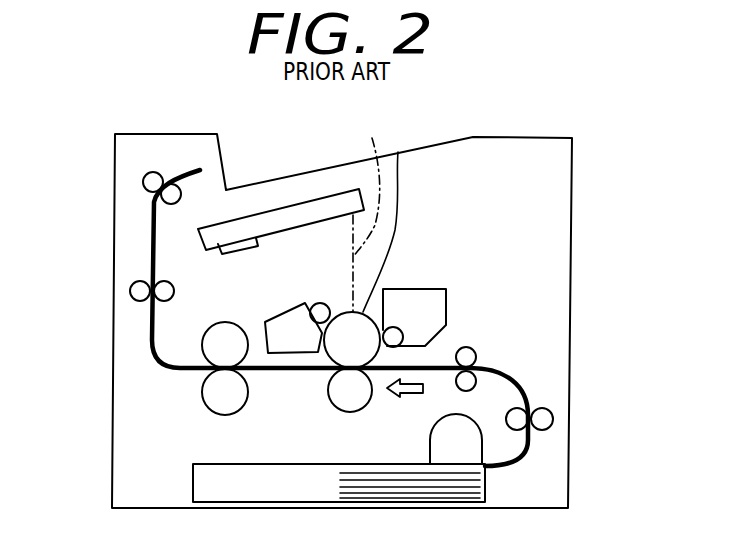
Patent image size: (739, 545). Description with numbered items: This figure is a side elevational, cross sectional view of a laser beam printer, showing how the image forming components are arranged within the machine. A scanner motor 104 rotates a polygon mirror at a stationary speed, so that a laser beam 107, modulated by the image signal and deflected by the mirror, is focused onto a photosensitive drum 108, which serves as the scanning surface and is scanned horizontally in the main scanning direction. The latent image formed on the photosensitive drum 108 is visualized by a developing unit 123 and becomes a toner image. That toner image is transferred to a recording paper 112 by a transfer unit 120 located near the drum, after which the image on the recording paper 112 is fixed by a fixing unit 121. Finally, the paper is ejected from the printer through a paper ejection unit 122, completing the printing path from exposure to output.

The scanner motor 104 is at (305, 202).
The laser beam 107 is at (371, 211).
The photosensitive drum 108 is at (398, 152).
The recording paper 112 is at (485, 490).
The transfer unit 120 is at (333, 404).
The fixing unit 121 is at (203, 394).
The paper ejection unit 122 is at (532, 138).
The developing unit 123 is at (446, 310).